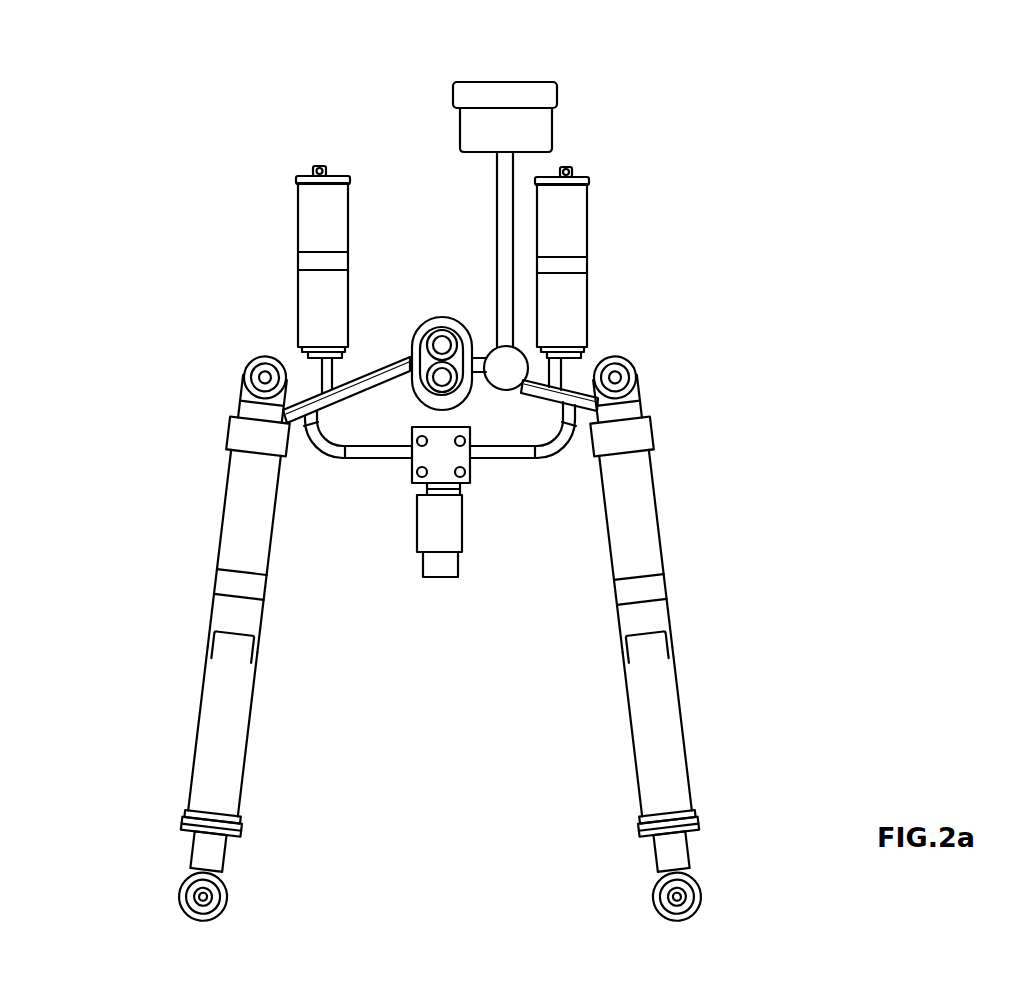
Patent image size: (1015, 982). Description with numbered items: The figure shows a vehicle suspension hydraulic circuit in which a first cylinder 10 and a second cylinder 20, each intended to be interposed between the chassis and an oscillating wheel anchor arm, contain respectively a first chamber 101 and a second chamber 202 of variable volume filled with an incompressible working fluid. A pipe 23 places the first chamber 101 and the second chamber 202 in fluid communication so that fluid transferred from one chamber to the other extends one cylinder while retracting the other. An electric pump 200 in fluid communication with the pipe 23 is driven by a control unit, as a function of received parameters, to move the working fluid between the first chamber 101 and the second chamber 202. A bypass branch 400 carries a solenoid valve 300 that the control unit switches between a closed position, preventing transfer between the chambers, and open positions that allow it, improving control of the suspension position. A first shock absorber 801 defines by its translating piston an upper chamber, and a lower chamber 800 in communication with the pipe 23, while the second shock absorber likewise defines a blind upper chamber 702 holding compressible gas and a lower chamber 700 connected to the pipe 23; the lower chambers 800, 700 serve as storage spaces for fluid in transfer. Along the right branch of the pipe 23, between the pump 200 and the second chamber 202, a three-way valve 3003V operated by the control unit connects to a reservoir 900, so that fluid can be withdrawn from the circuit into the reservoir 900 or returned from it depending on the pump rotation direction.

The first cylinder 10 is at (217, 687).
The first chamber 101 is at (238, 495).
The second cylinder 20 is at (680, 683).
The second chamber 202 is at (647, 560).
The pipe 23 is at (380, 364).
The electric pump 200 is at (442, 315).
The solenoid valve 300 is at (443, 542).
The three-way valve 3003V is at (505, 389).
The bypass branch 400 is at (350, 458).
The lower chamber 700 is at (567, 333).
The upper chamber 702 is at (570, 249).
The lower chamber 800 is at (310, 308).
The first shock absorber 801 is at (312, 218).
The reservoir 900 is at (513, 82).